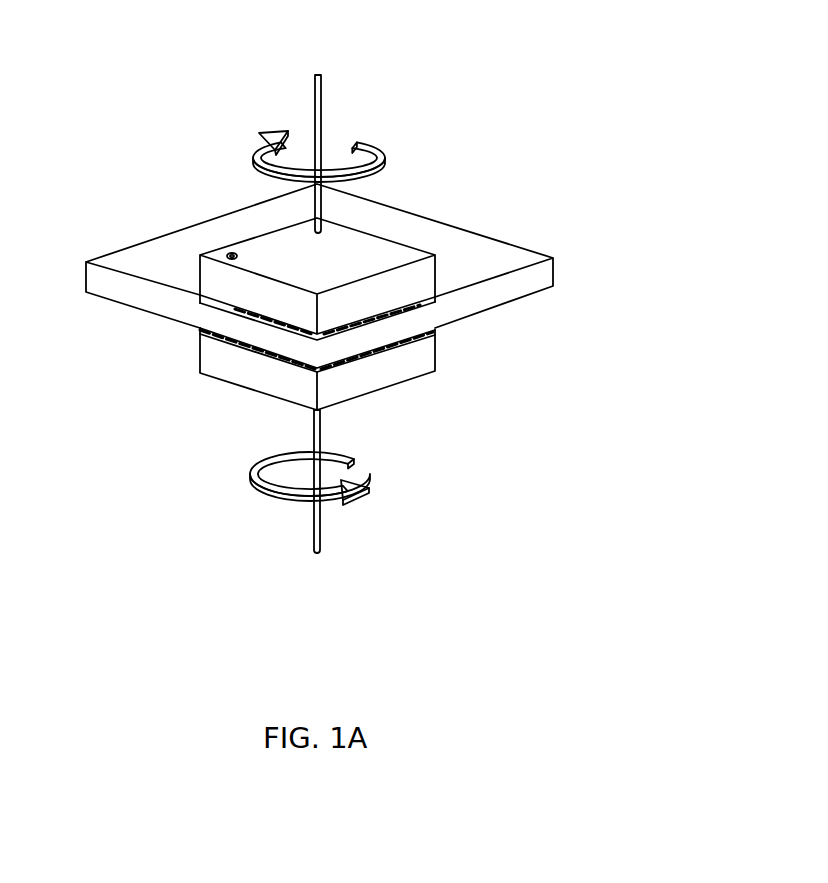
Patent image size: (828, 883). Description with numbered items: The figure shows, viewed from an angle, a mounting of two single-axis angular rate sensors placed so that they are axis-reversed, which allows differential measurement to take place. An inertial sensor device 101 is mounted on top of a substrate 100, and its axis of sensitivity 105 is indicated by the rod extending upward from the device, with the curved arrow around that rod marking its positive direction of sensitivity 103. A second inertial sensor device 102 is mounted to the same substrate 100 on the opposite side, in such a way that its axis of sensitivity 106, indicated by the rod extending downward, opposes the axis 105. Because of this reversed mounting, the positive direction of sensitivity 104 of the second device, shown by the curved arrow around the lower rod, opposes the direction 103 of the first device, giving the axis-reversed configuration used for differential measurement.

The substrate 100 is at (555, 274).
The inertial sensor device 101 is at (436, 257).
The second inertial sensor device 102 is at (200, 348).
The positive direction of sensitivity 103 is at (388, 147).
The positive direction of sensitivity 104 is at (372, 488).
The axis of sensitivity 105 is at (322, 82).
The axis of sensitivity 106 is at (312, 522).